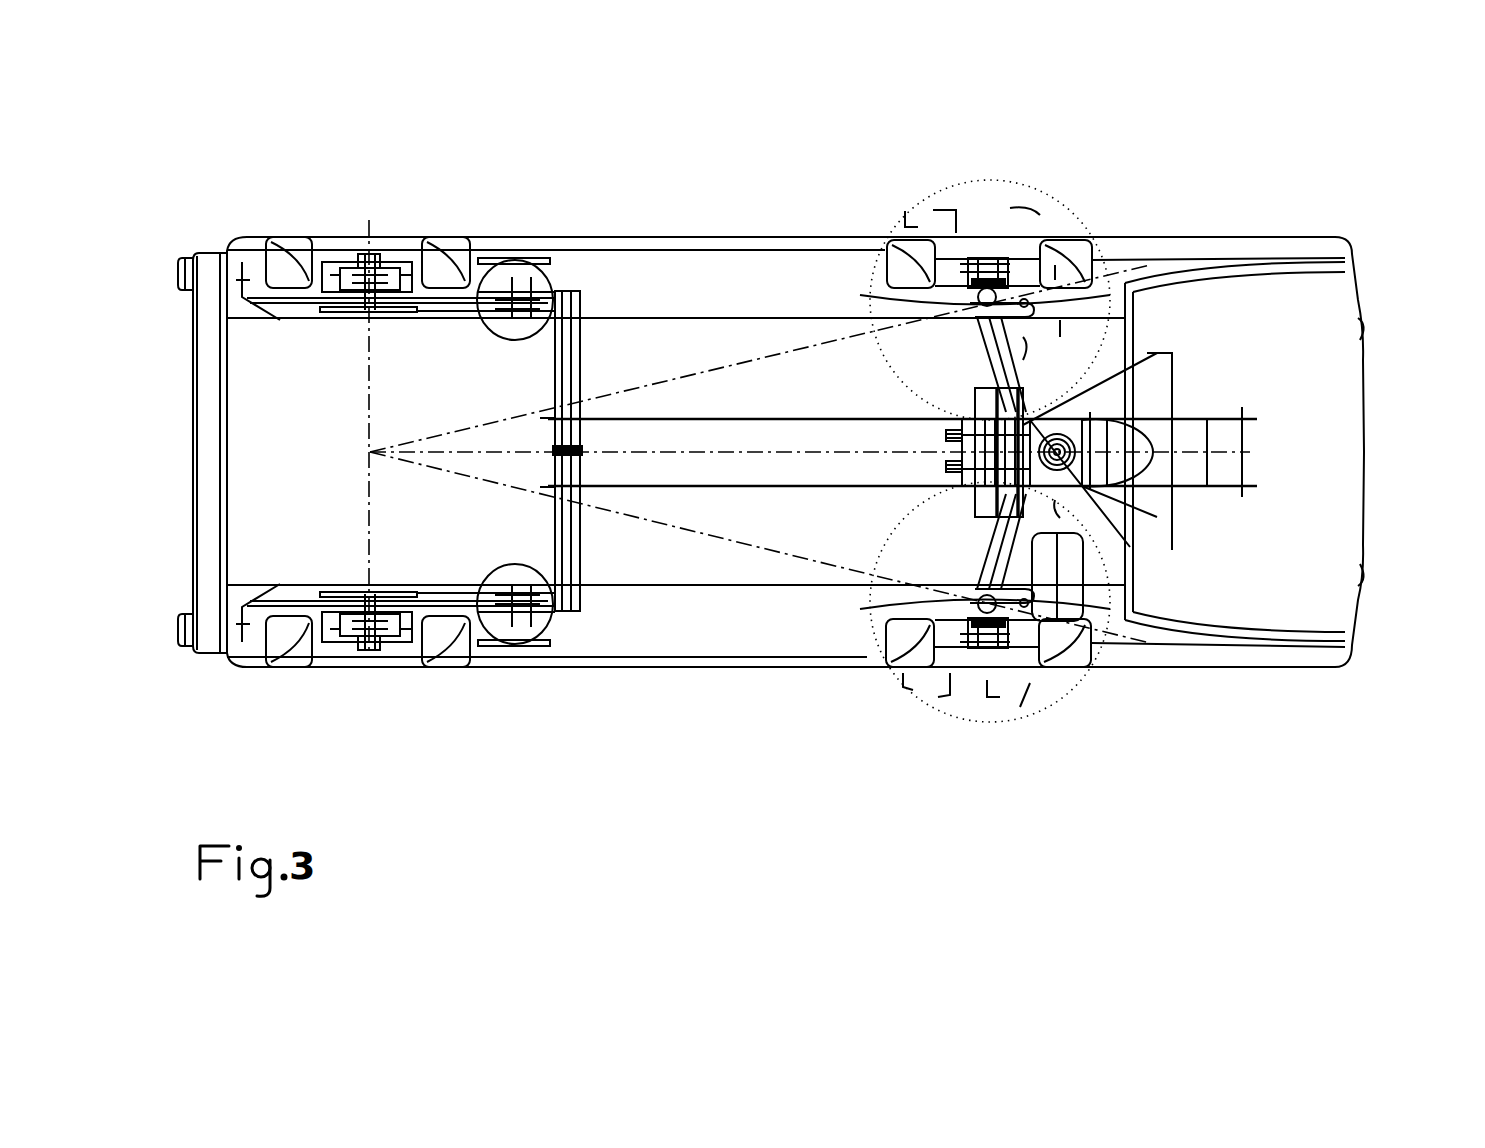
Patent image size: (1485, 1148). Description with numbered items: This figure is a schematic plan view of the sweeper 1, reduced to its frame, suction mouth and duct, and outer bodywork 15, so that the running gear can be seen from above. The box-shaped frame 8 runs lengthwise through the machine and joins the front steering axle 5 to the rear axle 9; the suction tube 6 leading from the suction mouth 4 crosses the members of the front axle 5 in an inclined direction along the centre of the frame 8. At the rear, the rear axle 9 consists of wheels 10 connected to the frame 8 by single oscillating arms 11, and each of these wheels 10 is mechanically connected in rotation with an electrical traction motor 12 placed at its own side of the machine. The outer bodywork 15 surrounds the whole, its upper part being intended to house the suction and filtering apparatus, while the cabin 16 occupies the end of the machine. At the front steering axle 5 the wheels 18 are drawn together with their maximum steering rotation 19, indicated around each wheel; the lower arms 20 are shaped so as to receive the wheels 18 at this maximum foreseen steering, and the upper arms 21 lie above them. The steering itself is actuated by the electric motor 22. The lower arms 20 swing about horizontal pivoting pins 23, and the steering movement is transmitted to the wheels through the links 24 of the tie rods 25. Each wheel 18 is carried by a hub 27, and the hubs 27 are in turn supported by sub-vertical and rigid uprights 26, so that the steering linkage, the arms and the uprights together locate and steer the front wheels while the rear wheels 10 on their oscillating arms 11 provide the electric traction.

The sweeper 1 is at (650, 180).
The suction mouth 4 is at (1153, 372).
The front steering axle 5 is at (1090, 186).
The suction tube 6 is at (850, 465).
The box-shaped frame 8 is at (830, 420).
The rear axle 9 is at (460, 700).
The wheels 10 is at (277, 267).
The single oscillating arms 11 is at (448, 303).
The electrical traction motor 12 is at (517, 277).
The bodywork 15 is at (741, 240).
The cabin 16 is at (1368, 405).
The wheels of the front steering axle 18 is at (1087, 250).
The maximum steering rotation 19 is at (912, 210).
The lower arms 20 is at (1023, 337).
The upper arms 21 is at (975, 363).
The electric motor 22 is at (1075, 603).
The horizontal pivoting pins 23 is at (945, 437).
The links 24 is at (1015, 298).
The tie rods 25 is at (1020, 328).
The sub-vertical rigid uprights 26 is at (875, 297).
The hubs 27 is at (986, 288).